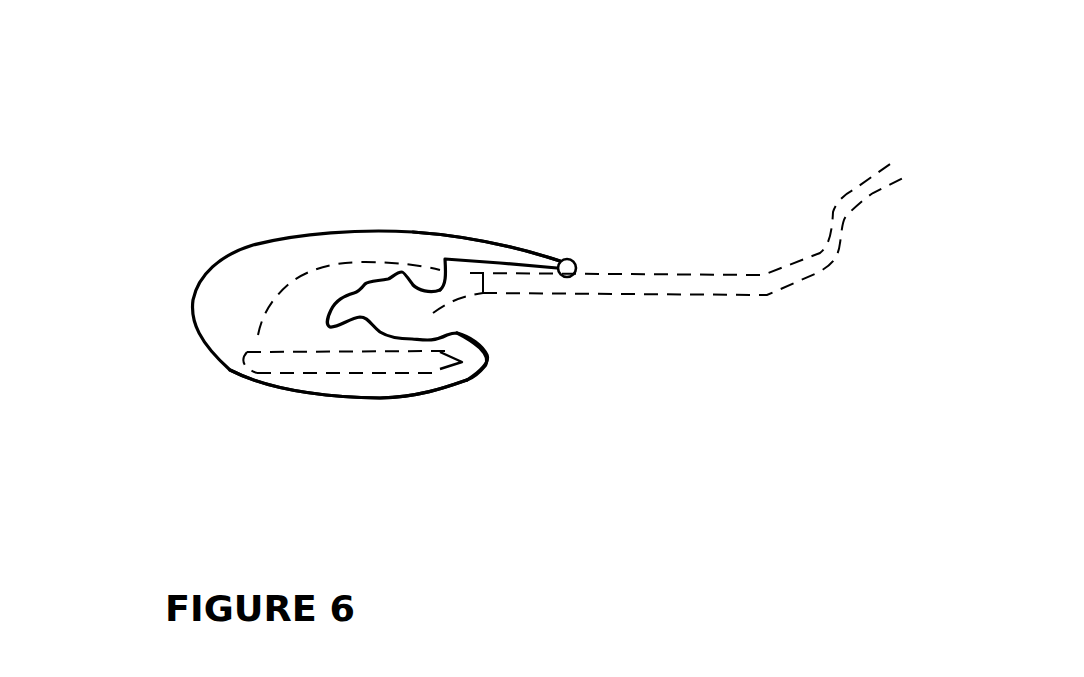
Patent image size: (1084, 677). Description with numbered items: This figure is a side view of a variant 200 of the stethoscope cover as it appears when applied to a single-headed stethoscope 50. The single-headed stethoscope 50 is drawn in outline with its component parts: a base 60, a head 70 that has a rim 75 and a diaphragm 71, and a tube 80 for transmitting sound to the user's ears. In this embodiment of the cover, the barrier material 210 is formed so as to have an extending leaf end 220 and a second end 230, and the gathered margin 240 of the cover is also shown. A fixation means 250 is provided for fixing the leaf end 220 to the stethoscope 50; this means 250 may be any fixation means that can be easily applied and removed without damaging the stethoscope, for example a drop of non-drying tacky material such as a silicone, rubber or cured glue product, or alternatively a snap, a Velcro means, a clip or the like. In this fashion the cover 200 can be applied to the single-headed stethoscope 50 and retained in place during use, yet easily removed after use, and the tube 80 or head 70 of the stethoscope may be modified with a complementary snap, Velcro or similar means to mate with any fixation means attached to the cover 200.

The stethoscope cover variant 200 is at (366, 271).
The single-headed stethoscope 50 is at (318, 248).
The base 60 is at (260, 253).
The head 70 is at (280, 343).
The diaphragm 71 is at (341, 374).
The rim 75 is at (460, 376).
The tube 80 is at (714, 238).
The barrier material 210 is at (358, 415).
The extending leaf end 220 is at (524, 230).
The second end 230 is at (485, 342).
The gathered margin 240 is at (344, 337).
The fixation means 250 is at (584, 255).